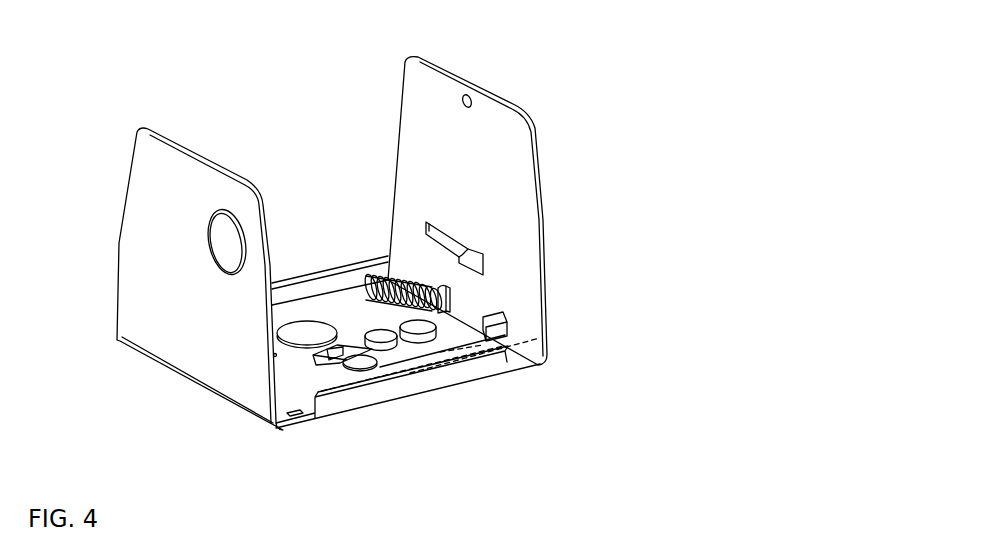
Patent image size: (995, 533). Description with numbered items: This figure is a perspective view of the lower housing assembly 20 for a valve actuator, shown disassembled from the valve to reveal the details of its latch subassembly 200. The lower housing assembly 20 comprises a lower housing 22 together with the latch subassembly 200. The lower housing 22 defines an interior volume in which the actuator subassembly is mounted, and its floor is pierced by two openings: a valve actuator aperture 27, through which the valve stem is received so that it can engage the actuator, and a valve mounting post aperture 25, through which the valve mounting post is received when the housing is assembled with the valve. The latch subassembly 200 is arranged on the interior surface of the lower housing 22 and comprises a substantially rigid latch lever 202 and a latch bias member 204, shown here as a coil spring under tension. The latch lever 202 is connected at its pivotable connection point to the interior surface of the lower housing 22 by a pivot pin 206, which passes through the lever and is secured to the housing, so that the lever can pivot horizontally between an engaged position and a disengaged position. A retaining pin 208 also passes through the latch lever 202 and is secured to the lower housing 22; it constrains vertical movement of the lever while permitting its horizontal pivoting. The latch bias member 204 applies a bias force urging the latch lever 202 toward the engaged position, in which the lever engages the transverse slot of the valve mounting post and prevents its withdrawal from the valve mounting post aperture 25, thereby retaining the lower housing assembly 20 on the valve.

The lower housing assembly 20 is at (595, 77).
The lower housing 22 is at (137, 303).
The valve mounting post aperture 25 is at (360, 367).
The valve actuator aperture 27 is at (301, 322).
The latch subassembly 200 is at (365, 310).
The latch lever 202 is at (447, 333).
The latch bias member 204 is at (415, 284).
The pivot pin 206 is at (418, 330).
The retaining pin 208 is at (383, 337).